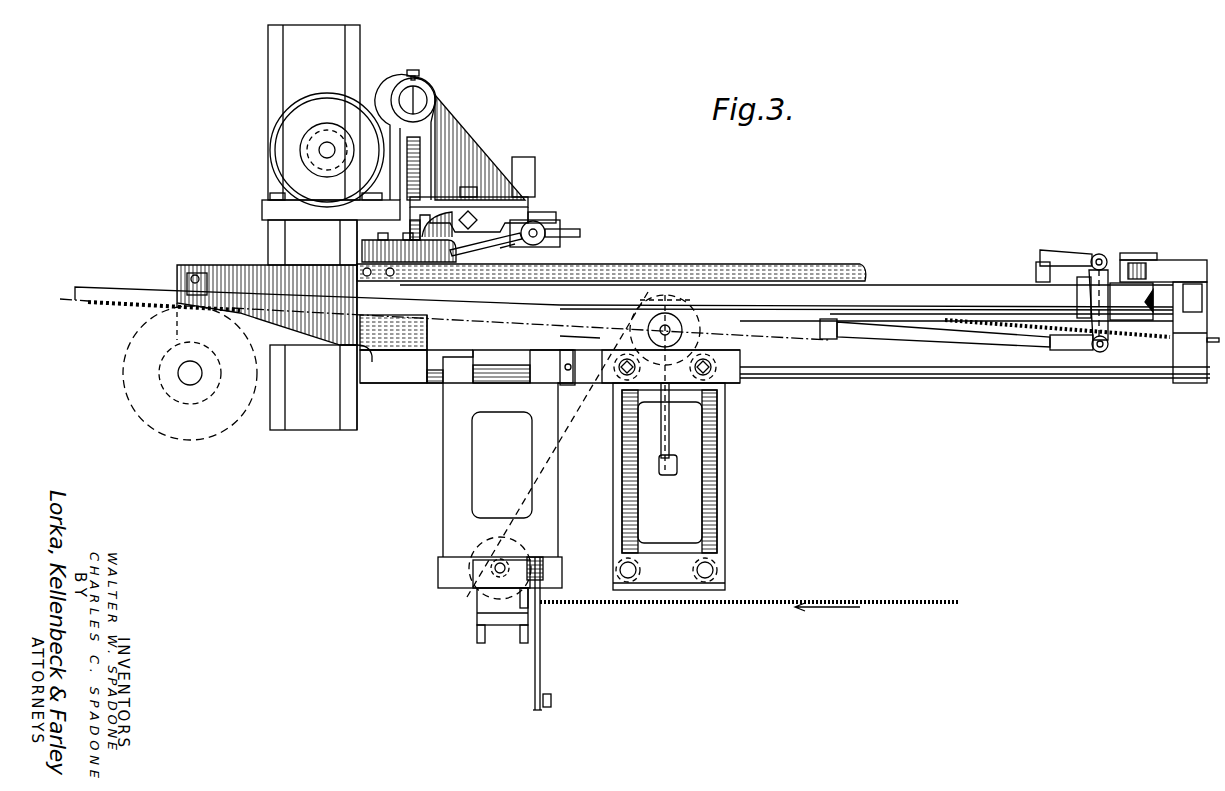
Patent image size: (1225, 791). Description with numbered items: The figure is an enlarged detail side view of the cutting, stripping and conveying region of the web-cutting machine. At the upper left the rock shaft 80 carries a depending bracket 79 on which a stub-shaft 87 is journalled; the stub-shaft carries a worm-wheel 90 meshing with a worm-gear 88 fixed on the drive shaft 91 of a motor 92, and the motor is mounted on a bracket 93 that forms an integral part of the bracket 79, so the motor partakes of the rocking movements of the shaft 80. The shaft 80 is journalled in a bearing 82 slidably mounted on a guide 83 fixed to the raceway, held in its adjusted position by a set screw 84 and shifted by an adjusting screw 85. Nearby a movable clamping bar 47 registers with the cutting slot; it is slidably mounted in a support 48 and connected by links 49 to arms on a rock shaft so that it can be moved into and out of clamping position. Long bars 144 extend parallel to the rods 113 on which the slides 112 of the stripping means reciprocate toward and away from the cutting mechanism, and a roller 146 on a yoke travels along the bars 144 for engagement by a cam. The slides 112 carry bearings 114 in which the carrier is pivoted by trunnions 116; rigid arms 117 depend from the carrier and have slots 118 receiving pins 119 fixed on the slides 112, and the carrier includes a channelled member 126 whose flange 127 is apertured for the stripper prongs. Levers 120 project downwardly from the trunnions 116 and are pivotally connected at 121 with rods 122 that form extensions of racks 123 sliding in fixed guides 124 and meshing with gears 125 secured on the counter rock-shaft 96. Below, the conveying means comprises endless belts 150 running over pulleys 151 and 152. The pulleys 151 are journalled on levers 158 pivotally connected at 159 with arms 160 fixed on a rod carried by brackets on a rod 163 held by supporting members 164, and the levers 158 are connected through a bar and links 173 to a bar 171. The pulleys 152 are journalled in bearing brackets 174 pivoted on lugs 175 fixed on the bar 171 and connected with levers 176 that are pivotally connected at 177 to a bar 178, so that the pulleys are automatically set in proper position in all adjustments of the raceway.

The clamping bar 47 is at (585, 233).
The support 48 is at (560, 228).
The links 49 is at (525, 245).
The bracket 79 is at (396, 128).
The shaft 80 is at (418, 106).
The bearing 82 is at (470, 188).
The guide 83 is at (530, 202).
The set screw 84 is at (506, 210).
The adjusting screw 85 is at (468, 230).
The stub-shaft 87 is at (356, 128).
The worm-gear 88 is at (318, 200).
The worm-wheel 90 is at (302, 168).
The drive shaft 91 is at (322, 148).
The motor 92 is at (281, 146).
The bracket 93 is at (266, 222).
The counter rock-shaft 96 is at (192, 376).
The slides 112 is at (1140, 326).
The rods 113 is at (945, 290).
The bearings 114 is at (1107, 257).
The trunnions 116 is at (1100, 254).
The rigid arms 117 is at (1110, 306).
The slots 118 is at (1106, 345).
The pins or studs 119 is at (1100, 352).
The levers 120 is at (1077, 300).
The pivotal connection 121 is at (1095, 351).
The rods 122 is at (976, 343).
The racks 123 is at (124, 290).
The fixed guides 124 is at (203, 280).
The gears 125 is at (133, 375).
The channelled member 126 is at (1036, 270).
The flange 127 is at (1051, 246).
The bars 144 is at (830, 265).
The roller 146 is at (1166, 259).
The endless belts 150 is at (860, 600).
The pulleys 151 is at (612, 338).
The pulleys 152 is at (532, 548).
The levers 158 is at (668, 440).
The pivotal connection 159 is at (685, 297).
The arms 160 is at (732, 338).
The rod 163 is at (723, 574).
The supporting members 164 is at (722, 522).
The bar 171 is at (497, 630).
The links 173 is at (558, 481).
The bearing brackets 174 is at (473, 590).
The lugs 175 is at (528, 602).
The levers 176 is at (542, 666).
The pivotal connection 177 is at (552, 700).
The bar 178 is at (541, 712).